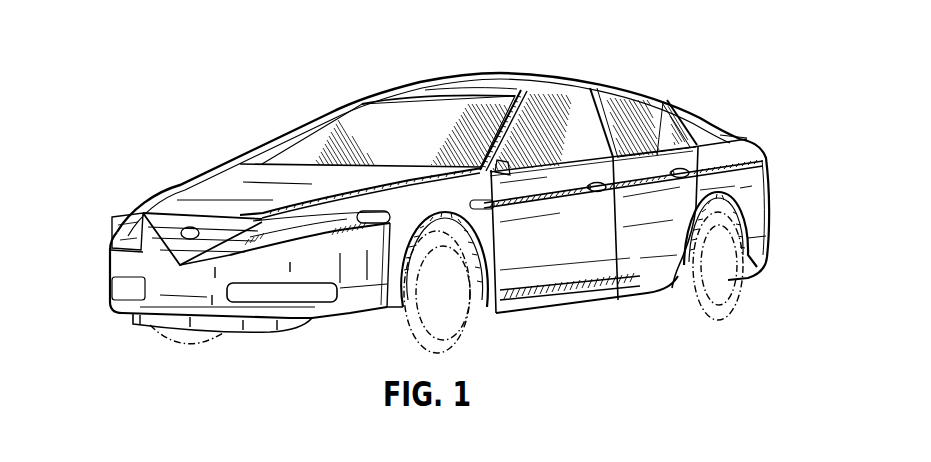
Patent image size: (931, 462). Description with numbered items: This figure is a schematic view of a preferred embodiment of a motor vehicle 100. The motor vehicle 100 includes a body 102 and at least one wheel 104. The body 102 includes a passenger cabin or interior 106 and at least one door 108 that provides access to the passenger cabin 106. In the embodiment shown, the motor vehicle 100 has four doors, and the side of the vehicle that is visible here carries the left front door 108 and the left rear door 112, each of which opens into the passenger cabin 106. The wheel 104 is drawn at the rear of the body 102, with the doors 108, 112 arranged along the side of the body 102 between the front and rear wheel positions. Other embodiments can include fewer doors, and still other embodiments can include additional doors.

The motor vehicle 100 is at (112, 72).
The body 102 is at (250, 183).
The wheel 104 is at (725, 270).
The passenger cabin 106 is at (420, 127).
The left front door 108 is at (538, 237).
The left rear door 112 is at (642, 237).